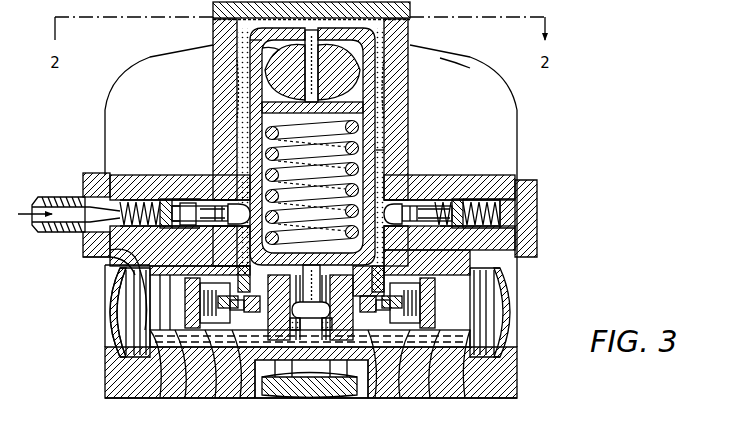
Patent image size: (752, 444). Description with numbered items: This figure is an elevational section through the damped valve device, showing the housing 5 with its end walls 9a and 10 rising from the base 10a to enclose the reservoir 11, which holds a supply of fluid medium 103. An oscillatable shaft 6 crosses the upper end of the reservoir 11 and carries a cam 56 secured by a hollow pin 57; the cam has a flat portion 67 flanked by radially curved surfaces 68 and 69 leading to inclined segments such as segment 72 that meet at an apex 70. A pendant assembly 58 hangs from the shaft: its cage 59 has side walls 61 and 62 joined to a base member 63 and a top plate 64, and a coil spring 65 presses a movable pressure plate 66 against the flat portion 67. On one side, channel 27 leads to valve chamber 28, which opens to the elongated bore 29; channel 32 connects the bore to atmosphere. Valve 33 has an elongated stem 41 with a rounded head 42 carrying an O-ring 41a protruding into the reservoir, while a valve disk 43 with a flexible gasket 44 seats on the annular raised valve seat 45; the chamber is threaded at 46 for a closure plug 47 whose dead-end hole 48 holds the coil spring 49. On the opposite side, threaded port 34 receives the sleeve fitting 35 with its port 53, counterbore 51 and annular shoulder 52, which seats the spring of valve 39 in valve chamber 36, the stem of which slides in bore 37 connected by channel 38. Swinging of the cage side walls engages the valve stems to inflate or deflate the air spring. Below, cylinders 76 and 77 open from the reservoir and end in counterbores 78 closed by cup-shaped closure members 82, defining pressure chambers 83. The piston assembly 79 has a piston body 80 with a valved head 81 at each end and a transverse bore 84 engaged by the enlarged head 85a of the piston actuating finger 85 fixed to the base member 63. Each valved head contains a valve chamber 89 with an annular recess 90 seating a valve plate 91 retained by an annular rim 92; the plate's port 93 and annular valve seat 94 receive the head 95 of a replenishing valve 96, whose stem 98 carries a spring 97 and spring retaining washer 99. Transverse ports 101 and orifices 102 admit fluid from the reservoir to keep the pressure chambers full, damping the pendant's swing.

The housing 5 is at (517, 115).
The oscillatable shaft 6 is at (339, 72).
The end wall 9a is at (118, 258).
The end wall 10 is at (517, 263).
The base 10a is at (517, 383).
The reservoir 11 is at (230, 138).
The channel 27 is at (485, 230).
The valve chamber 28 is at (480, 199).
The elongated bore 29 is at (430, 206).
The channel 32 is at (415, 228).
The valve 33 is at (425, 236).
The threaded port 34 is at (100, 250).
The sleeve fitting 35 is at (90, 240).
The valve chamber 36 is at (165, 199).
The elongated bore 37 is at (188, 212).
The channel 38 is at (192, 226).
The valve 39 is at (182, 199).
The elongated stem 41 is at (212, 224).
The O-ring 41a is at (221, 206).
The rounded head 42 is at (240, 226).
The valve disk 43 is at (458, 199).
The flexible gasket 44 is at (458, 230).
The annular raised valve seat 45 is at (172, 232).
The threaded portion 46 is at (118, 198).
The closure plug 47 is at (537, 185).
The dead-end hole 48 is at (500, 222).
The coil spring 49 is at (500, 212).
The counterbore 51 is at (140, 200).
The annular shoulder 52 is at (96, 197).
The port 53 is at (55, 210).
The cam 56 is at (270, 60).
The hollow pin 57 is at (375, 20).
The pendant assembly 58 is at (250, 42).
The cage 59 is at (262, 96).
The side wall 61 is at (250, 126).
The side wall 62 is at (385, 88).
The base member 63 is at (368, 280).
The top plate 64 is at (330, 19).
The coil spring 65 is at (370, 150).
The movable pressure plate 66 is at (378, 122).
The flat portion 67 is at (285, 72).
The radially curved surface 68 is at (262, 110).
The radially curved surface 69 is at (365, 108).
The apex 70 is at (237, 70).
The inclined flat segment 72 is at (459, 59).
The cylinder 76 is at (160, 347).
The cylinder 77 is at (470, 347).
The enlarged counterbore 78 is at (105, 350).
The piston assembly 79 is at (250, 348).
The piston body 80 is at (370, 347).
The valved head 81 is at (220, 347).
The closure member 82 is at (105, 310).
The fluid pressure chamber 83 is at (120, 397).
The bore 84 is at (300, 395).
The piston actuating finger 85 is at (303, 285).
The enlarged head 85a is at (311, 319).
The valve chamber 89 is at (290, 322).
The annular recess 90 is at (190, 347).
The valve plate 91 is at (192, 266).
The annular rim 92 is at (186, 288).
The port 93 is at (232, 262).
The annular valve seat 94 is at (245, 347).
The head 95 is at (200, 300).
The replenishing valve 96 is at (218, 302).
The spring 97 is at (252, 362).
The stem 98 is at (235, 310).
The spring retaining washer 99 is at (246, 288).
The transverse port 101 is at (272, 280).
The orifice 102 is at (258, 304).
The fluid medium 103 is at (385, 152).